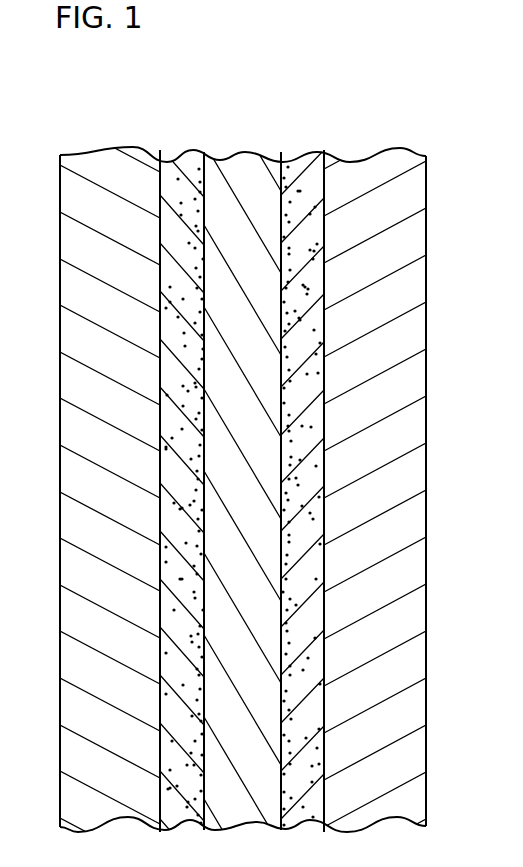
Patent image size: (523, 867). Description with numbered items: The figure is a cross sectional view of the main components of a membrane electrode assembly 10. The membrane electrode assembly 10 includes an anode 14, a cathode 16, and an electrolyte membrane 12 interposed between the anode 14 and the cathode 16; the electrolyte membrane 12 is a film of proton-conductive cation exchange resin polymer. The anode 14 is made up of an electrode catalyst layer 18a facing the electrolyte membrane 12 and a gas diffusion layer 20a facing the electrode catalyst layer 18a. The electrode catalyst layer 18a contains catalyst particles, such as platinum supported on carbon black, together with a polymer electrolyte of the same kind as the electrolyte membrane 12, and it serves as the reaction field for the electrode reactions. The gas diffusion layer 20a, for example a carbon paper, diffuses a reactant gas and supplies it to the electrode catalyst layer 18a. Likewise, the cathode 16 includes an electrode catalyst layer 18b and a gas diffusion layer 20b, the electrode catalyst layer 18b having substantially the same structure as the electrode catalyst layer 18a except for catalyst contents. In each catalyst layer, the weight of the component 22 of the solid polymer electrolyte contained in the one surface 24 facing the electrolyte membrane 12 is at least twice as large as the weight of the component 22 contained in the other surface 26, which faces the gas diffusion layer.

The membrane electrode assembly 10 is at (393, 57).
The electrolyte membrane 12 is at (243, 158).
The anode 14 is at (105, 98).
The cathode 16 is at (297, 98).
The electrode catalyst layer 18a is at (190, 153).
The electrode catalyst layer 18b is at (314, 157).
The gas diffusion layer 20a is at (127, 150).
The gas diffusion layer 20b is at (376, 160).
The component of the solid polymer electrolyte 22 is at (178, 254).
The one surface 24 is at (205, 590).
The another surface 26 is at (157, 341).